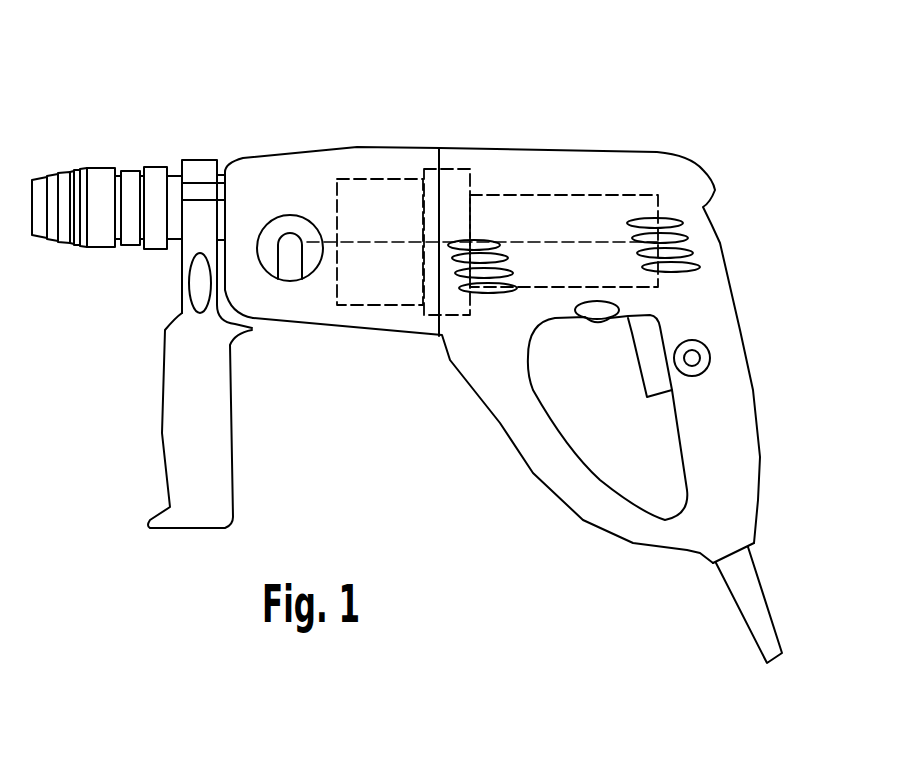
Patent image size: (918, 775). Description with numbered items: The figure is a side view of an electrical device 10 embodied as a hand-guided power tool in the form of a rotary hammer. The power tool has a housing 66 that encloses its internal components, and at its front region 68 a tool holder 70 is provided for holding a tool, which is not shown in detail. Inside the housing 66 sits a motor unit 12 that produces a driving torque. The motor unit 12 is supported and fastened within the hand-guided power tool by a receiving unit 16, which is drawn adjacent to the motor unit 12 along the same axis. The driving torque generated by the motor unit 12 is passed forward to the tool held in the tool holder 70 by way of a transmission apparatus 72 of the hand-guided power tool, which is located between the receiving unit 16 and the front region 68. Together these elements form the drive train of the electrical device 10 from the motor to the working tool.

The electrical device 10 is at (411, 334).
The motor unit 12 is at (588, 223).
The receiving unit 16 is at (433, 288).
The housing 66 is at (693, 185).
The front region 68 is at (188, 151).
The tool holder 70 is at (102, 183).
The transmission apparatus 72 is at (373, 200).